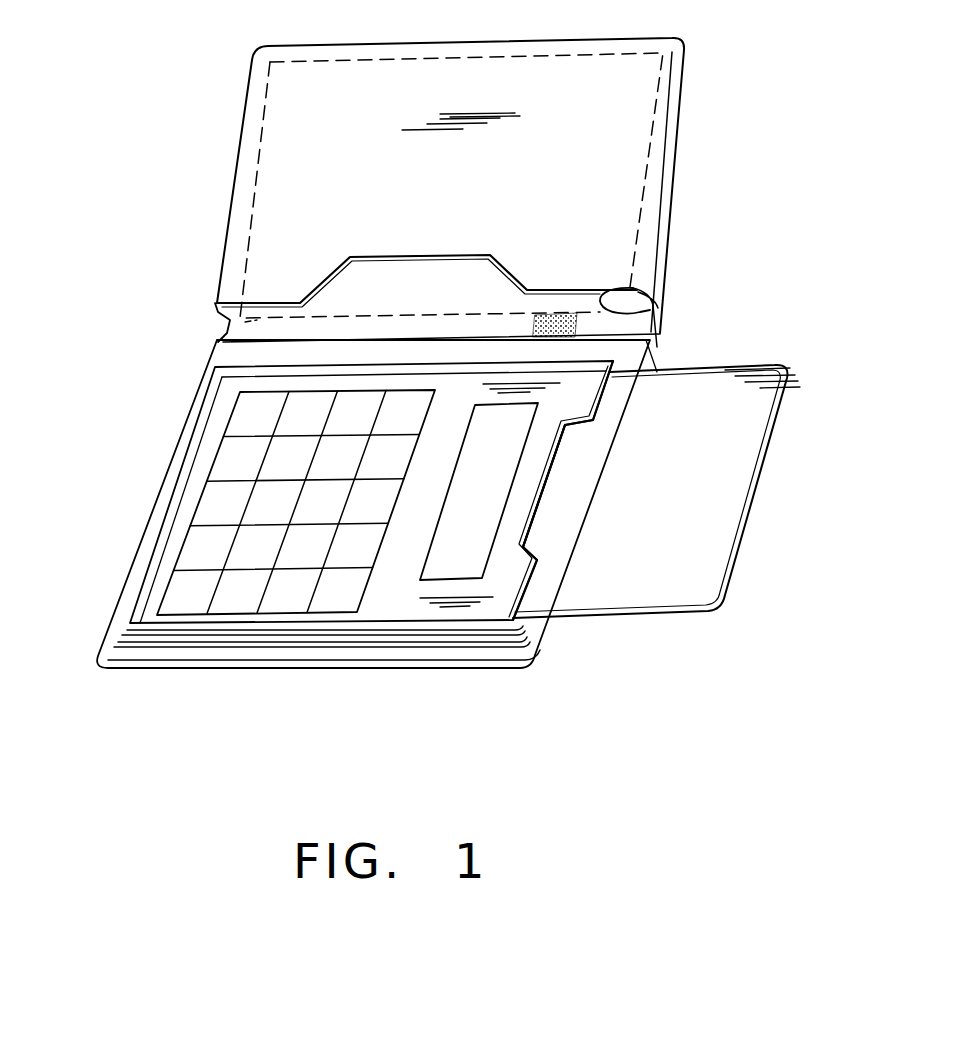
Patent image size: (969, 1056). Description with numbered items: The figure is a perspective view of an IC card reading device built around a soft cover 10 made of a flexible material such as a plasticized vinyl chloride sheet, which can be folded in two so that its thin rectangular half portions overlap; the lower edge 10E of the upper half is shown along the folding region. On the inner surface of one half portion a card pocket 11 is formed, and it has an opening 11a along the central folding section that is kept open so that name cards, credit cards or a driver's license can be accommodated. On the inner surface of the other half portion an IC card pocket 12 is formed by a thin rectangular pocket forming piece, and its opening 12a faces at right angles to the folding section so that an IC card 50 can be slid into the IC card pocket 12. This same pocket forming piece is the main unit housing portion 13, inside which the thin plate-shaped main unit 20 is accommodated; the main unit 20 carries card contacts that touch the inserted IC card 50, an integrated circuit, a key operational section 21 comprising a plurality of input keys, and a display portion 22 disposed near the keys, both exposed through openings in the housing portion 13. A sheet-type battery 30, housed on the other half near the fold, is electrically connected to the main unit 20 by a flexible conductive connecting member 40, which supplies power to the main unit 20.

The soft cover 10 is at (135, 557).
The lid lower edge 10E is at (398, 340).
The card pocket 11 is at (217, 265).
The opening 11a is at (647, 312).
The IC card pocket 12 is at (527, 597).
The opening 12a is at (547, 500).
The main unit housing portion 13 is at (388, 597).
The main unit 20 is at (232, 593).
The key operational section 21 is at (233, 462).
The display portion 22 is at (458, 563).
The sheet-type battery 30 is at (214, 330).
The flexible conductive connecting member 40 is at (553, 335).
The IC card 50 is at (735, 527).